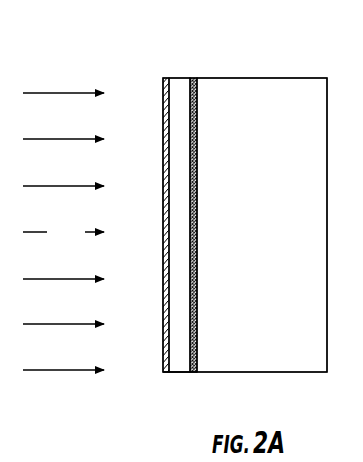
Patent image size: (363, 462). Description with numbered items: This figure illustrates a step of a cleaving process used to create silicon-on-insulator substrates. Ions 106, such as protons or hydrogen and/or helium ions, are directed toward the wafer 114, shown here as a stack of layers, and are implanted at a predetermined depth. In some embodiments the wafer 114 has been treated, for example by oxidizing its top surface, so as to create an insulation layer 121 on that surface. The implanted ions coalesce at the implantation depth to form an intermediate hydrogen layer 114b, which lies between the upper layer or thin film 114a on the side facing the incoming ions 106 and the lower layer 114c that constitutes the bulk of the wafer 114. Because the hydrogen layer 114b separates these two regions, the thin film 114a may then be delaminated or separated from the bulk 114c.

The ions 106 is at (63, 231).
The wafer 114 is at (243, 74).
The upper layer or thin film 114a is at (178, 117).
The intermediate hydrogen layer 114b is at (179, 76).
The lower layer or bulk 114c is at (285, 244).
The insulation layer 121 is at (167, 374).